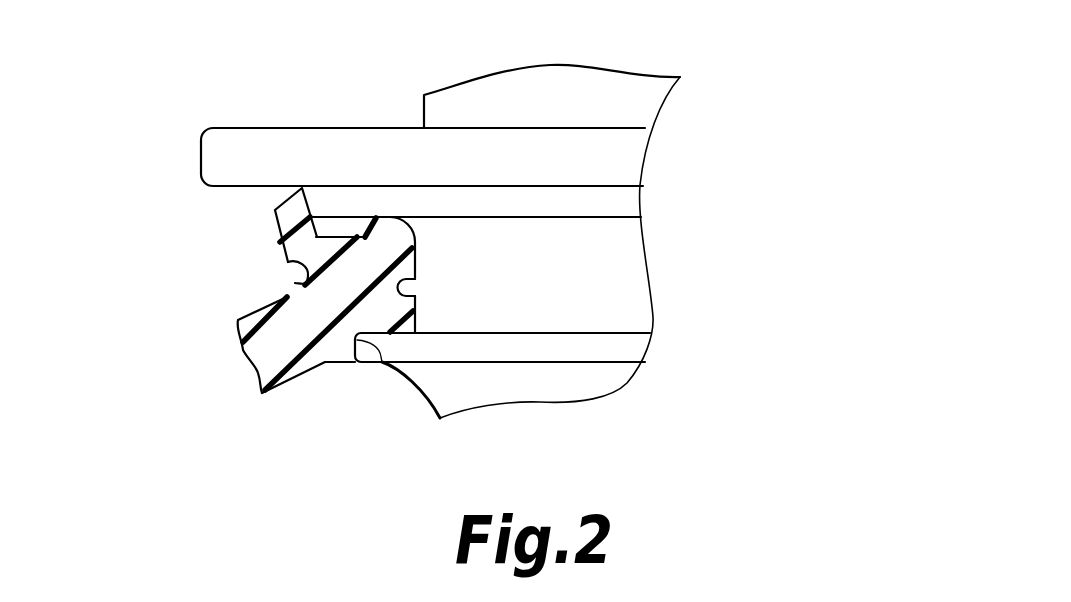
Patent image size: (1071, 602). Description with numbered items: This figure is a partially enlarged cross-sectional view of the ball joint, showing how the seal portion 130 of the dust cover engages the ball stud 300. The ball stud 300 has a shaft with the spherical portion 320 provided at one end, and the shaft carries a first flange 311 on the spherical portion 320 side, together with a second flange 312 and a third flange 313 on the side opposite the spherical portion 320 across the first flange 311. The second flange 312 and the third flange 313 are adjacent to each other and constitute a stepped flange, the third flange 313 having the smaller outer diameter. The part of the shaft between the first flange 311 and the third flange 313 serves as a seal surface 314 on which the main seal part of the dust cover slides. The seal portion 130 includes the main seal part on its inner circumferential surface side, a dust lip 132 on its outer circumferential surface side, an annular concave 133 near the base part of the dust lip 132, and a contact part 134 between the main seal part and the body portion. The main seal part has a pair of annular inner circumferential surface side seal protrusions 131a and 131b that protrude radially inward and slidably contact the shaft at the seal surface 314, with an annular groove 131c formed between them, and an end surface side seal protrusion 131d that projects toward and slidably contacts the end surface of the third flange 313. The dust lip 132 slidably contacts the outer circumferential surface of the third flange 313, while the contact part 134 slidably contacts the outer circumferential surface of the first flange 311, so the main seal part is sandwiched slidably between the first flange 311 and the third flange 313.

The seal portion 130 is at (316, 233).
The inner circumferential surface side seal protrusion 131a is at (413, 315).
The inner circumferential surface side seal protrusion 131b is at (414, 257).
The annular groove 131c is at (403, 288).
The end surface side seal protrusion 131d is at (377, 222).
The dust lip 132 is at (288, 212).
The annular concave 133 is at (307, 283).
The contact part 134 is at (383, 366).
The ball stud 300 is at (553, 214).
The first flange 311 is at (627, 350).
The second flange 312 is at (627, 160).
The third flange 313 is at (627, 202).
The seal surface 314 is at (627, 275).
The spherical portion 320 is at (612, 100).